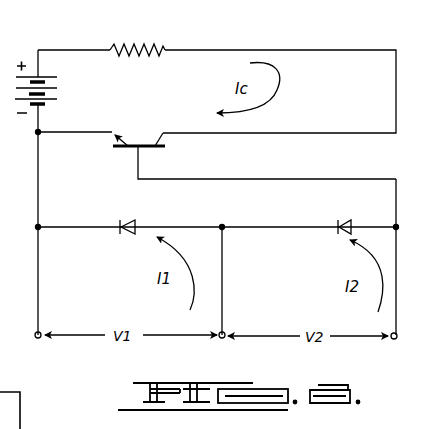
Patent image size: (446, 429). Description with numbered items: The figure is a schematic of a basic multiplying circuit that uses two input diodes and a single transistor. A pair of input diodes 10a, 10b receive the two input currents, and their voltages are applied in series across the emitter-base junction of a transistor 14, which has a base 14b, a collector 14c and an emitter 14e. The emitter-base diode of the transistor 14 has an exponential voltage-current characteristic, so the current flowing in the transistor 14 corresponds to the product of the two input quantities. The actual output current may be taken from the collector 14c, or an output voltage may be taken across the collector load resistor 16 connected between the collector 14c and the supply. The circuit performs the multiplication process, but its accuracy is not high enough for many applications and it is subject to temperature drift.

The collector load resistor 16 is at (142, 47).
The transistor 14 is at (230, 144).
The emitter 14e is at (112, 138).
The base 14b is at (234, 167).
The collector 14c is at (163, 138).
The input diode 10a is at (123, 235).
The input diode 10b is at (340, 236).